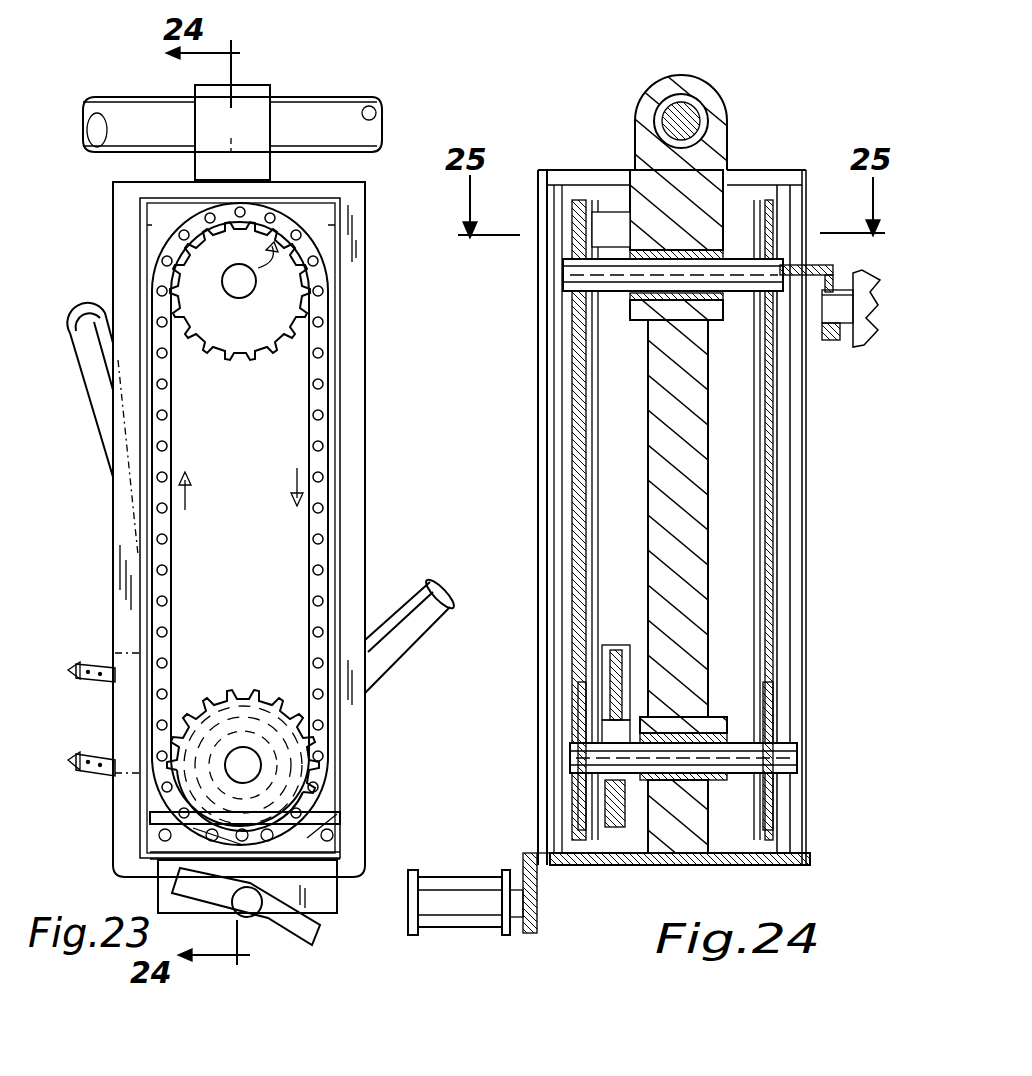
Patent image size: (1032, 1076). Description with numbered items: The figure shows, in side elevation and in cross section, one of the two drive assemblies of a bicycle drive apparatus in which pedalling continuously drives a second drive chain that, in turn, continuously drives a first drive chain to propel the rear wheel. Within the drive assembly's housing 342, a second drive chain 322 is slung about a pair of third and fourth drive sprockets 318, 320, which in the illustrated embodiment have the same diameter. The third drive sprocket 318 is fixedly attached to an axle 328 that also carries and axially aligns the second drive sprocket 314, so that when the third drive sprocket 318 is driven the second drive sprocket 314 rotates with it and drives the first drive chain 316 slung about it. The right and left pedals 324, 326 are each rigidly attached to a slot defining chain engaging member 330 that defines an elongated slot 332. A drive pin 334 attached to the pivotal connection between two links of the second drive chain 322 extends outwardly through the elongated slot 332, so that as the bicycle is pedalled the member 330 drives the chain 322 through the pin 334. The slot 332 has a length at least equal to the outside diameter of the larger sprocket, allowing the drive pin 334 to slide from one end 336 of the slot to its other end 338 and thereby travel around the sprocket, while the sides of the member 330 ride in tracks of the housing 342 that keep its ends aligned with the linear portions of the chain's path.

In FIG. 23, the second drive sprocket 314 is at (232, 700).
In FIG. 24, the second drive sprocket 314 is at (610, 705).
In FIG. 23, the first drive chain 316 is at (96, 662).
In FIG. 24, the first drive chain 316 is at (617, 645).
In FIG. 23, the third drive sprocket 318 is at (268, 690).
In FIG. 24, the third drive sprocket 318 is at (580, 705).
In FIG. 23, the fourth drive sprocket 320 is at (170, 248).
In FIG. 24, the fourth drive sprocket 320 is at (556, 208).
In FIG. 23, the second drive chain 322 is at (160, 300).
In FIG. 24, the second drive chain 322 is at (580, 500).
In FIG. 23, the right pedal 324 is at (312, 945).
In FIG. 24, the right pedal 324 is at (487, 858).
In FIG. 24, the left pedal 326 is at (858, 350).
In FIG. 23, the axle 328 is at (238, 760).
In FIG. 24, the axle 328 is at (780, 757).
In FIG. 23, the slot defining chain engaging member 330 is at (305, 820).
In FIG. 24, the slot defining chain engaging member 330 is at (806, 262).
In FIG. 23, the elongated slot 332 is at (322, 833).
In FIG. 23, the drive pin 334 is at (172, 852).
In FIG. 24, the drive pin 334 is at (790, 205).
In FIG. 23, the one end of the slot 336 is at (330, 822).
In FIG. 23, the other end of the slot 338 is at (165, 826).
In FIG. 23, the housing 342 is at (352, 437).
In FIG. 24, the housing 342 is at (757, 205).